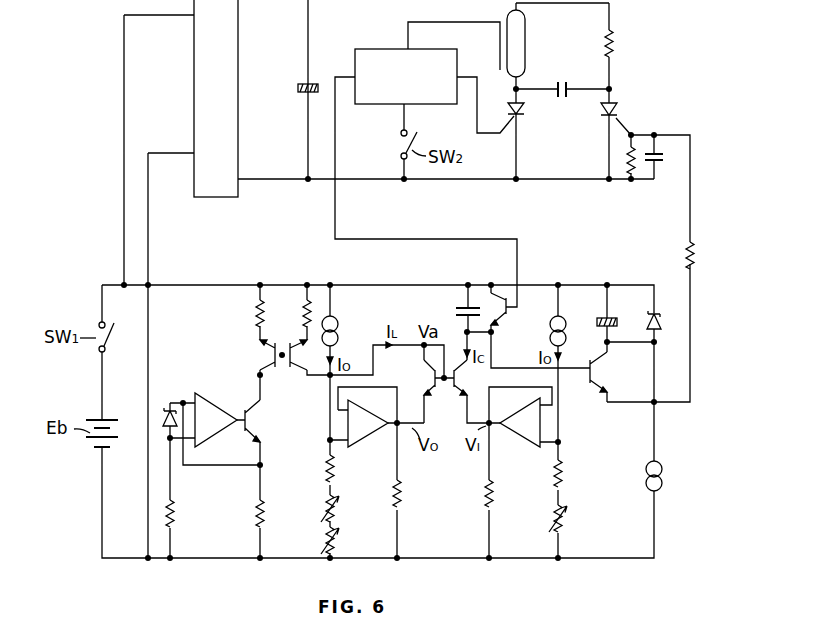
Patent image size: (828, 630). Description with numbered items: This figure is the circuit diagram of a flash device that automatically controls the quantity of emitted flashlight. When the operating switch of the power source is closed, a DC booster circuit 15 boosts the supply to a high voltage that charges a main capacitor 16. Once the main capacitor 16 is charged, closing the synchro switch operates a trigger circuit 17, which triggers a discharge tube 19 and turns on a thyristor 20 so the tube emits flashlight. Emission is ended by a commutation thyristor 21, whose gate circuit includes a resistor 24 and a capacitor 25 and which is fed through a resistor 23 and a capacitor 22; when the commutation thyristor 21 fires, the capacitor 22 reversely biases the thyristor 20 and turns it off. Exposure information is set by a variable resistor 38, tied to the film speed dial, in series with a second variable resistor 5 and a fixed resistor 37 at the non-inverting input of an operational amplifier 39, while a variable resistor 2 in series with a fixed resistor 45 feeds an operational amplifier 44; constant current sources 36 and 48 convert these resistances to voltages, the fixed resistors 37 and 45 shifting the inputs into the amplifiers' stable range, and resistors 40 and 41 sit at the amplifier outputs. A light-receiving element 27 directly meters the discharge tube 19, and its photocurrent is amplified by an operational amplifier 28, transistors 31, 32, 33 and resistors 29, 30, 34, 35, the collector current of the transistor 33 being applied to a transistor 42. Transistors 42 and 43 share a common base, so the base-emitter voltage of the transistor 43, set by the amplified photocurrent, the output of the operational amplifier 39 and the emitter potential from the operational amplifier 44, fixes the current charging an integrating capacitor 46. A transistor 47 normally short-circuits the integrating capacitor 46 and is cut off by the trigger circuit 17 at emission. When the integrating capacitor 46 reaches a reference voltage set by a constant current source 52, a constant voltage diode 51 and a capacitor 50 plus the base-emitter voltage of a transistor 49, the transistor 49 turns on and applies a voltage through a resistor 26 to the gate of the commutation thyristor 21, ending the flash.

The variable resistor 2 is at (567, 520).
The second variable resistor 5 is at (322, 536).
The DC booster circuit 15 is at (201, 198).
The main capacitor 16 is at (302, 84).
The trigger circuit 17 is at (380, 48).
The discharge tube 19 is at (528, 31).
The thyristor 20 is at (525, 111).
The commutation thyristor 21 is at (619, 110).
The capacitor 22 is at (567, 81).
The resistor 23 is at (615, 46).
The resistor 24 is at (625, 161).
The capacitor 25 is at (664, 163).
The resistor 26 is at (700, 252).
The light-receiving element 27 is at (166, 412).
The operational amplifier 28 is at (226, 412).
The resistor 29 is at (176, 512).
The resistor 30 is at (253, 515).
The transistor 31 is at (262, 431).
The transistor 32 is at (261, 357).
The transistor 33 is at (299, 372).
The resistor 34 is at (252, 312).
The resistor 35 is at (300, 315).
The constant current source 36 is at (338, 325).
The fixed resistor 37 is at (322, 470).
The variable resistor 38 is at (339, 508).
The operational amplifier 39 is at (371, 440).
The resistor 40 is at (405, 495).
The resistor 41 is at (484, 496).
The transistor 42 is at (408, 376).
The transistor 43 is at (455, 393).
The operational amplifier 44 is at (522, 443).
The fixed resistor 45 is at (565, 476).
The integrating capacitor 46 is at (455, 312).
The transistor 47 is at (500, 318).
The constant current source 48 is at (565, 330).
The transistor 49 is at (582, 390).
The capacitor 50 is at (615, 318).
The constant voltage diode 51 is at (658, 320).
The constant current source 52 is at (664, 483).